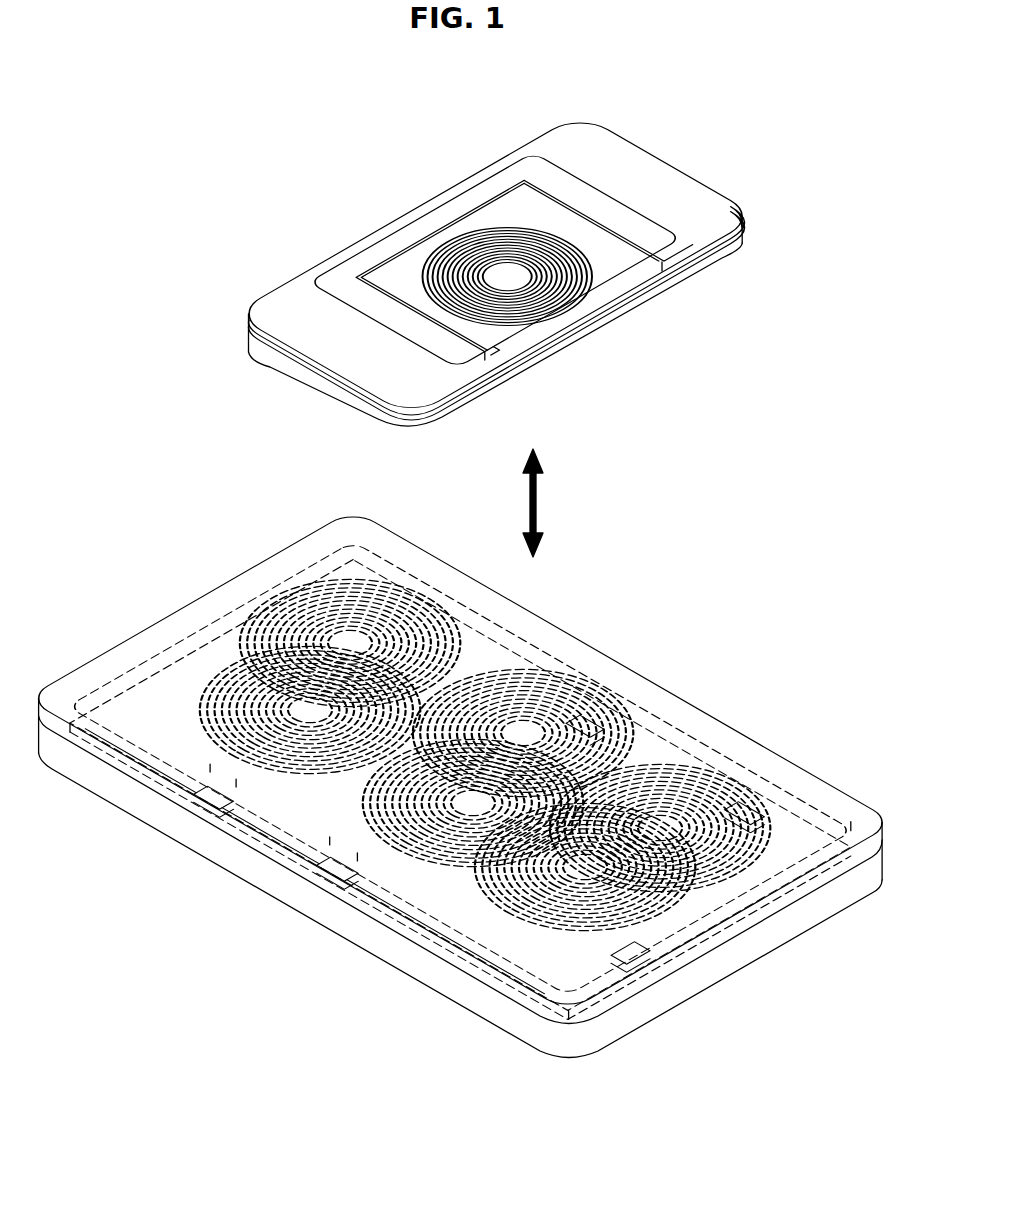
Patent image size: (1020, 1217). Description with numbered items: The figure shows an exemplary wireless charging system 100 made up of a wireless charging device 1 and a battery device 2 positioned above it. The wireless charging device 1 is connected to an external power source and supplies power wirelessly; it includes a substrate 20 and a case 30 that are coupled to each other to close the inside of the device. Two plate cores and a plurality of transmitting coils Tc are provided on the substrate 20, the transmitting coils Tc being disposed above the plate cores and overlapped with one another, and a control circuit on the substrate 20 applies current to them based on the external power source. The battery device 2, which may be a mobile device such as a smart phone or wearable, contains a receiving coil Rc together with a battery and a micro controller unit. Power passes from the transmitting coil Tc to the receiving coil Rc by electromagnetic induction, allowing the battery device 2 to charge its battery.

The wireless charging system 100 is at (130, 116).
The wireless charging device 1 is at (732, 687).
The battery device 2 is at (733, 150).
The substrate 20 is at (247, 830).
The case 30 is at (757, 758).
The transmitting coil Tc is at (187, 753).
The receiving coil Rc is at (574, 304).